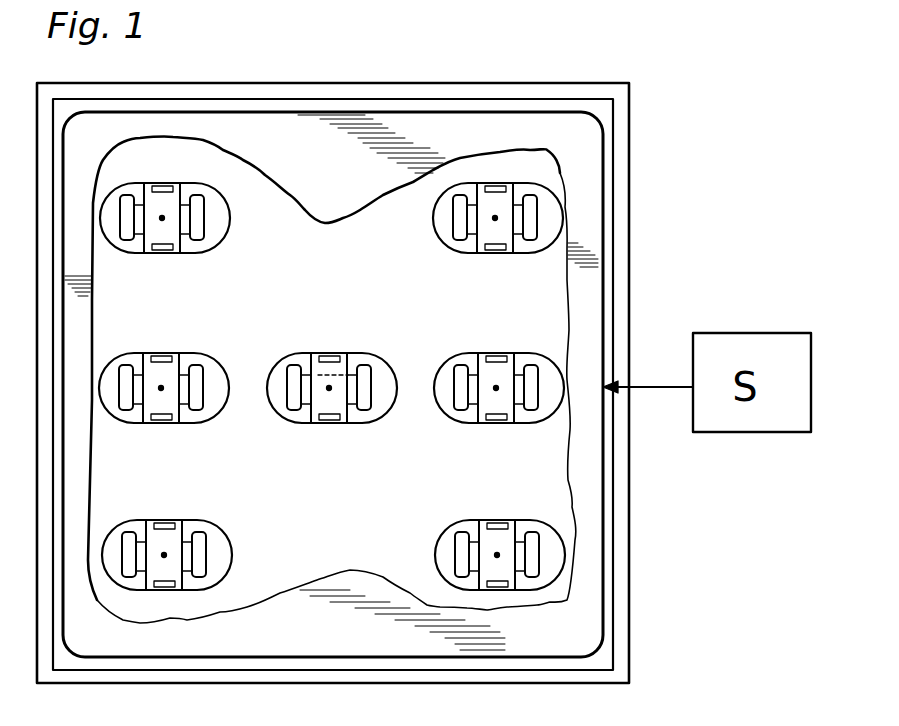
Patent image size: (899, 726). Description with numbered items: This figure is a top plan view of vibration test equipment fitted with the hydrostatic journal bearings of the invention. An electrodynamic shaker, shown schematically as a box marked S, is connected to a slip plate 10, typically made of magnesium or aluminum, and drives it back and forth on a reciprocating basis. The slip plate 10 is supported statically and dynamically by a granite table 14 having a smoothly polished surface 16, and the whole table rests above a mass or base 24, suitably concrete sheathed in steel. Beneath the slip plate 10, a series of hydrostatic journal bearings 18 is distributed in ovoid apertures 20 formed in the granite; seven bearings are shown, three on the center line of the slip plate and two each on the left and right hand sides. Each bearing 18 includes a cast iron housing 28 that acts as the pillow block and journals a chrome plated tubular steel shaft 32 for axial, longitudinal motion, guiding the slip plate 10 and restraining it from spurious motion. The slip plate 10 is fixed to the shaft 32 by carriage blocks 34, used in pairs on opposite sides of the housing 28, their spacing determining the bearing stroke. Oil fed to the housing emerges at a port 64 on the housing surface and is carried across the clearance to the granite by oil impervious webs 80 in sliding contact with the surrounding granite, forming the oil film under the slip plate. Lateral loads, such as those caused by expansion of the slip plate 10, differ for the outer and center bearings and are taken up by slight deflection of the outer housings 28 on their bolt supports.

The slip plate 10 is at (587, 612).
The granite table 14 is at (577, 674).
The smoothly polished surface 16 is at (603, 658).
The hydrostatic journal bearing 18 is at (201, 407).
The ovoid aperture 20 is at (450, 404).
The base 24 is at (485, 686).
The housing 28 is at (152, 238).
The shaft 32 is at (184, 255).
The carriage block 34 is at (121, 208).
The port 64 is at (498, 554).
The web 80 is at (500, 590).